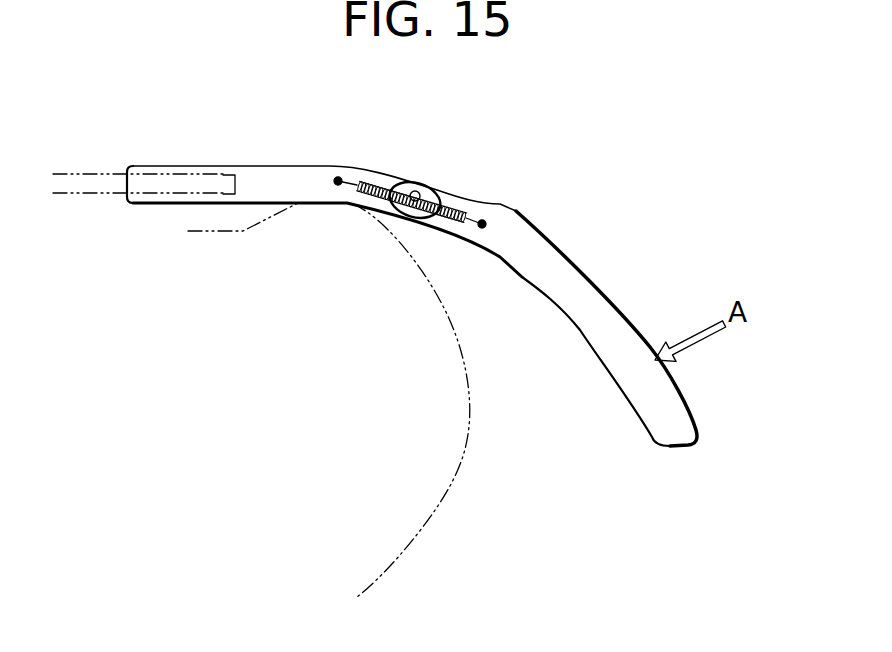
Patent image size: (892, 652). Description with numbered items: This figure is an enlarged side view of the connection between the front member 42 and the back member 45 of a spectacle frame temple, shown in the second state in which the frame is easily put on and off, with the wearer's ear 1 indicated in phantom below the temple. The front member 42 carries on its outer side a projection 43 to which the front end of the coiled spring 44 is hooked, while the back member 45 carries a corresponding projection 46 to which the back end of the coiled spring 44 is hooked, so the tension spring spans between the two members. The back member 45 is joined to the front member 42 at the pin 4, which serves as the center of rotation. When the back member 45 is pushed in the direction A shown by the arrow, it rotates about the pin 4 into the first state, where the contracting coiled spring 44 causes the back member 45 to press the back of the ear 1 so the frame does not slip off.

The ear 1 is at (462, 455).
The pin 4 is at (433, 183).
The front member 42 is at (262, 177).
The projection 43 is at (338, 178).
The coiled spring 44 is at (371, 182).
The back member 45 is at (560, 254).
The projection 46 is at (484, 223).